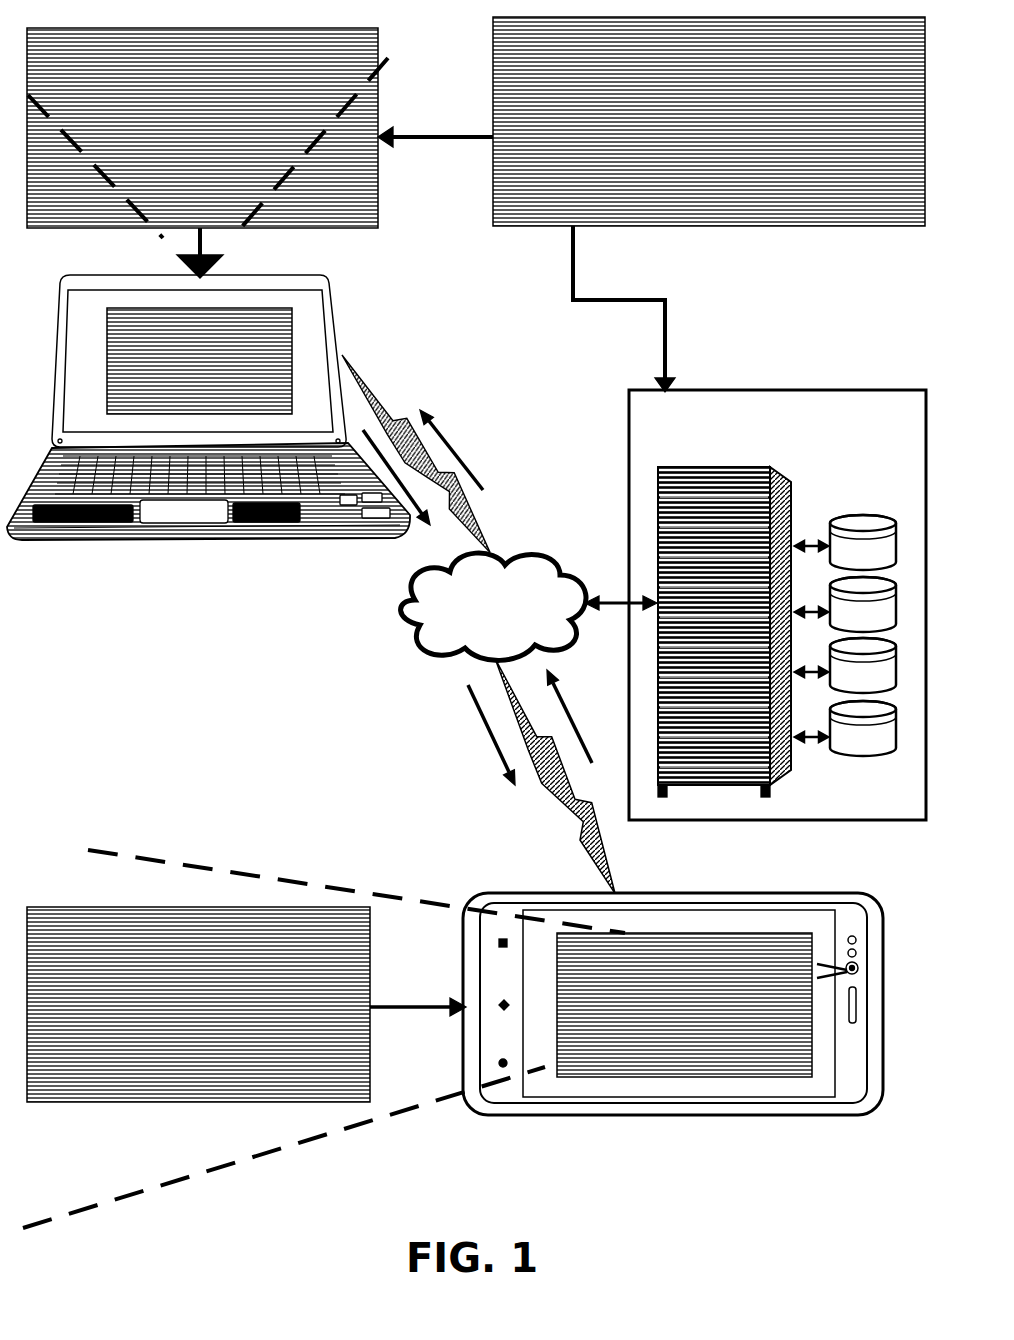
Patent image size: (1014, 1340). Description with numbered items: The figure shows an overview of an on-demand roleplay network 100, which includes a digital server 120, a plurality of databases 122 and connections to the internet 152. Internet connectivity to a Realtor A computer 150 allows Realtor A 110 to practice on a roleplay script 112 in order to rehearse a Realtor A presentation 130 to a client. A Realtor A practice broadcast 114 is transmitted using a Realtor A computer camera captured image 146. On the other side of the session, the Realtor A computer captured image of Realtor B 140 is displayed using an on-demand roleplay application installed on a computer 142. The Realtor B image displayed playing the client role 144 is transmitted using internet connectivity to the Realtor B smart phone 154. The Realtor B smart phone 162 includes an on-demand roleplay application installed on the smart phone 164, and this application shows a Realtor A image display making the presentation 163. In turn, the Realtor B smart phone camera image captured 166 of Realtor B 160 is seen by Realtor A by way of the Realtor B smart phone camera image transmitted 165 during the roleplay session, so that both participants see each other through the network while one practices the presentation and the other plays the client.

The on-demand roleplay network 100 is at (905, 392).
The Realtor A 110 is at (758, 208).
The roleplay script 112 is at (602, 213).
The Realtor A practice broadcast 114 is at (433, 143).
The digital server 120 is at (790, 513).
The plurality of databases 122 is at (878, 522).
The Realtor A presentation 130 is at (372, 115).
The Realtor A computer captured image of Realtor B 140 is at (333, 310).
The on-demand roleplay application installed on a computer 142 is at (68, 300).
The Realtor B image displayed playing the client role 144 is at (120, 367).
The Realtor A computer camera captured image 146 is at (163, 240).
The Realtor A computer 150 is at (470, 530).
The internet 152 is at (405, 618).
The internet connectivity to Realtor B smart phone 154 is at (573, 805).
The Realtor B 160 is at (133, 1088).
The Realtor B smart phone 162 is at (683, 1115).
The Realtor A image display making the presentation 163 is at (785, 1052).
The on-demand roleplay application installed on the smart phone 164 is at (835, 922).
The Realtor B smart phone camera image transmitted 165 is at (412, 1012).
The Realtor B smart phone camera image captured 166 is at (243, 872).